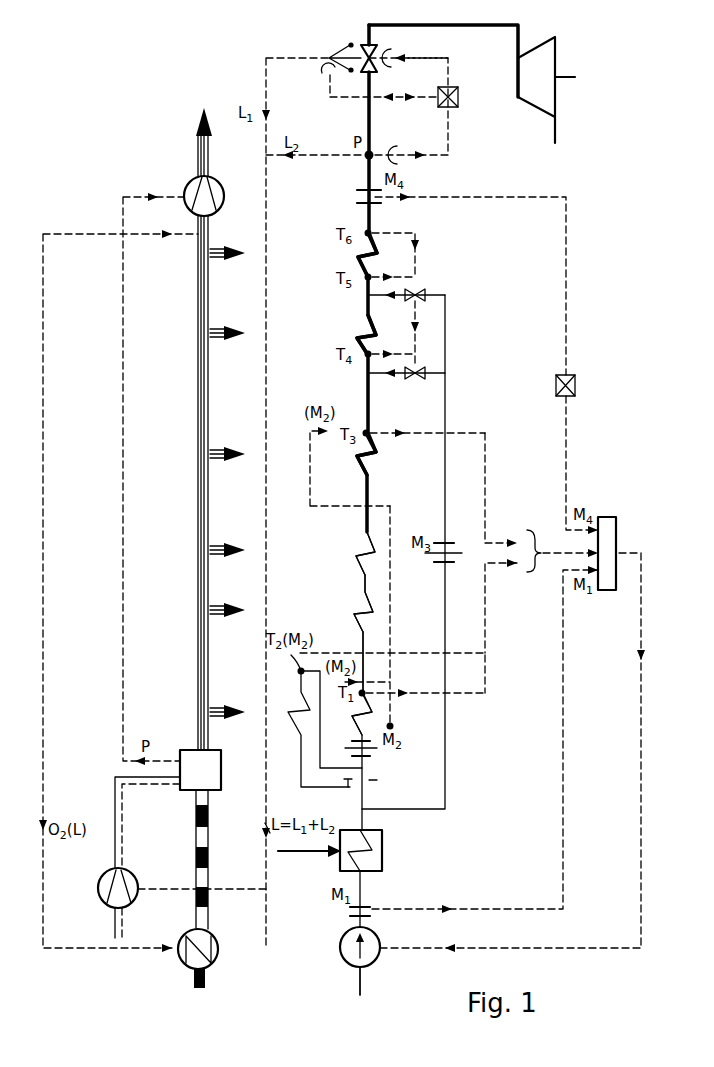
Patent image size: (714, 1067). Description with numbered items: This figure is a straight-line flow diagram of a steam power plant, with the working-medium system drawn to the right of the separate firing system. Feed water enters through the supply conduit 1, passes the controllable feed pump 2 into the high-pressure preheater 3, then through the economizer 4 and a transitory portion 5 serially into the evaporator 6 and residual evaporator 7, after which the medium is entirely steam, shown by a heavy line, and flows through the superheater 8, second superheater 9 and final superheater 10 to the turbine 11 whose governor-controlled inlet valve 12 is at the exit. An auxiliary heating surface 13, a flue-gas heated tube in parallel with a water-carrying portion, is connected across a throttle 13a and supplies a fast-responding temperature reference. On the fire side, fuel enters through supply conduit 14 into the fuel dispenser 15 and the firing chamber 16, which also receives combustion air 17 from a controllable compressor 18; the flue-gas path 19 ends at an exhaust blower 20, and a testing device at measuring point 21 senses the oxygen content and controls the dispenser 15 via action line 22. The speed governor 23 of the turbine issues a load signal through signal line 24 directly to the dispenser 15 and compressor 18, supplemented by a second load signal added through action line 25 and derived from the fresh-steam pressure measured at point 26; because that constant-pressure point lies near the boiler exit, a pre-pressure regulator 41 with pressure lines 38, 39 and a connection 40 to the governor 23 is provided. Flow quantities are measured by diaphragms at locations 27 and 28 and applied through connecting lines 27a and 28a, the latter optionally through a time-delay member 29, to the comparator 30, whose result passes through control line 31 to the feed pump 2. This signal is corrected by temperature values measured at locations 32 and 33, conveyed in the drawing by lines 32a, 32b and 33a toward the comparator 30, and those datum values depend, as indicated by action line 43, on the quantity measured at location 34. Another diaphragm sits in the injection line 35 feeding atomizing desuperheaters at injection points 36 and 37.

The supply conduit 1 is at (361, 980).
The controllable feed pump 2 is at (382, 922).
The high-pressure preheater 3 is at (375, 845).
The economizer 4 is at (356, 714).
The transitory portion 5 is at (362, 642).
The evaporator 6 is at (358, 613).
The residual evaporator 7 is at (356, 564).
The superheater 8 is at (360, 462).
The second superheater 9 is at (363, 330).
The final superheater 10 is at (373, 252).
The turbine 11 is at (557, 50).
The governor-controlled inlet valve 12 is at (365, 47).
The auxiliary heating surface 13 is at (301, 748).
The throttle 13a is at (345, 782).
The fuel supply conduit 14 is at (205, 974).
The fuel dispenser 15 is at (210, 936).
The firing chamber 16 is at (221, 763).
The combustion air 17 is at (122, 826).
The controllable compressor 18 is at (128, 876).
The flue gas path 19 is at (198, 470).
The exhaust blower 20 is at (186, 186).
The measuring point 21 is at (199, 236).
The action line 22 is at (43, 478).
The speed governor 23 is at (334, 56).
The signal line 24 is at (266, 70).
The action line 25 is at (322, 142).
The measuring point 26 is at (372, 150).
The measuring location 27 is at (362, 903).
The connecting line 27a is at (563, 805).
The measuring location 28 is at (365, 189).
The connecting line 28a is at (566, 455).
The time-delay member 29 is at (556, 386).
The comparator 30 is at (616, 530).
The control line 31 is at (641, 712).
The temperature measuring location 32 is at (364, 690).
The signal line 32a is at (485, 584).
The signal line 32b is at (452, 653).
The temperature measuring location 33 is at (370, 429).
The signal line 33a is at (490, 452).
The flow measuring location 34 is at (368, 752).
The injection line 35 is at (445, 471).
The injection point 36 is at (369, 375).
The injection point 37 is at (370, 297).
The pressure line 38 is at (405, 147).
The pressure line 39 is at (408, 40).
The connection 40 is at (323, 70).
The pre-pressure regulator 41 is at (458, 95).
The action line 43 is at (398, 660).